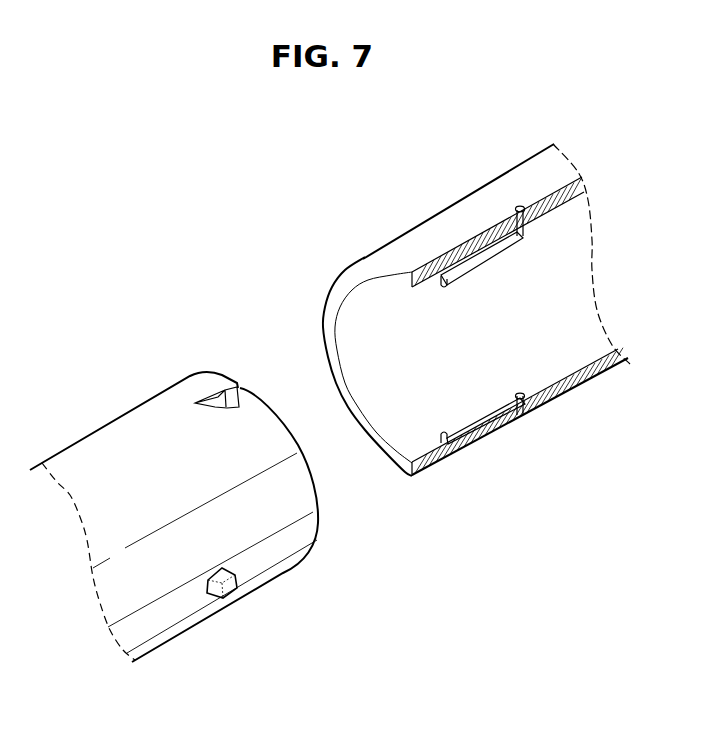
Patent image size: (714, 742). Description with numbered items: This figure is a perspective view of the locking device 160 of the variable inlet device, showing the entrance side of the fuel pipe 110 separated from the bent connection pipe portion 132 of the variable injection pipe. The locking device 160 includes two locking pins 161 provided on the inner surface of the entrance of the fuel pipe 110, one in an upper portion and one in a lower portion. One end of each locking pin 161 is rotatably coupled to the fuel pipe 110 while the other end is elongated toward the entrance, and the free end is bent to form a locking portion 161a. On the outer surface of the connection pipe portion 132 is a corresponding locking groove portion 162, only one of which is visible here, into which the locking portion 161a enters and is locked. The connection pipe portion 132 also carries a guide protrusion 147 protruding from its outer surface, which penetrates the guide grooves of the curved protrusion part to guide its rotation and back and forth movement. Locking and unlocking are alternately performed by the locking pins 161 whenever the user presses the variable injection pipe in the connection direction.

The fuel pipe 110 is at (497, 190).
The connection pipe portion 132 is at (83, 448).
The guide protrusion 147 is at (236, 590).
The locking device 160 is at (210, 240).
The locking pin 161 is at (445, 262).
The locking portion 161a is at (447, 288).
The locking groove portion 162 is at (219, 369).